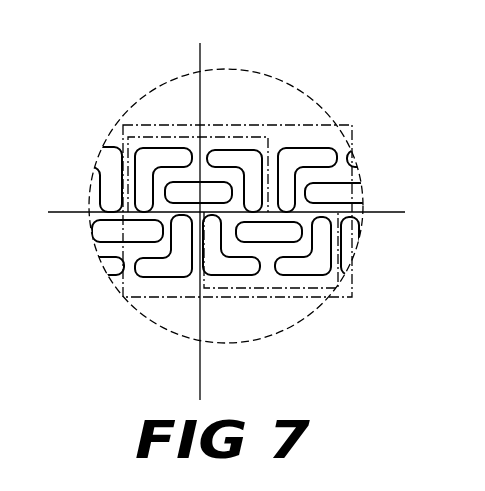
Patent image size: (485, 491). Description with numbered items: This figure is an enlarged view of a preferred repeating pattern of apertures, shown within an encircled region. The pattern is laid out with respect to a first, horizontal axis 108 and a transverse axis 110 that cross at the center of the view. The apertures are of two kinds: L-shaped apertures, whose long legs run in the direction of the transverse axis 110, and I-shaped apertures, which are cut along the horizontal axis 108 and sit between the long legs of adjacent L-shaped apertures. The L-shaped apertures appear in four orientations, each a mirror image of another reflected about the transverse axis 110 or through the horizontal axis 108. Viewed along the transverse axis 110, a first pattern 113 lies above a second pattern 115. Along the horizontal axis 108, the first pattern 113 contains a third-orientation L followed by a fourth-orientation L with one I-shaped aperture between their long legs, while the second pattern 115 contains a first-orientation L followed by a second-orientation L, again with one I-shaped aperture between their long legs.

The first axis 108 is at (62, 212).
The transverse axis 110 is at (198, 57).
The first pattern 113 is at (340, 137).
The second pattern 115 is at (343, 278).